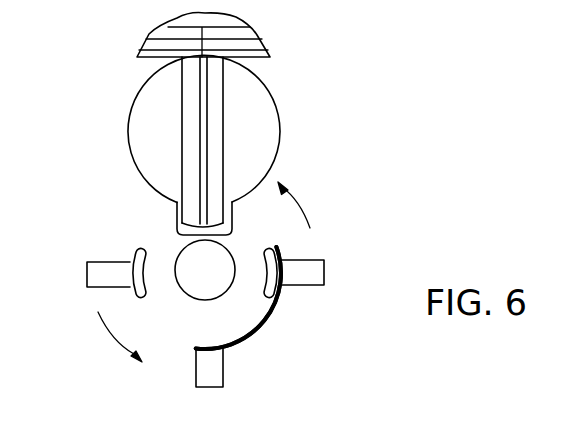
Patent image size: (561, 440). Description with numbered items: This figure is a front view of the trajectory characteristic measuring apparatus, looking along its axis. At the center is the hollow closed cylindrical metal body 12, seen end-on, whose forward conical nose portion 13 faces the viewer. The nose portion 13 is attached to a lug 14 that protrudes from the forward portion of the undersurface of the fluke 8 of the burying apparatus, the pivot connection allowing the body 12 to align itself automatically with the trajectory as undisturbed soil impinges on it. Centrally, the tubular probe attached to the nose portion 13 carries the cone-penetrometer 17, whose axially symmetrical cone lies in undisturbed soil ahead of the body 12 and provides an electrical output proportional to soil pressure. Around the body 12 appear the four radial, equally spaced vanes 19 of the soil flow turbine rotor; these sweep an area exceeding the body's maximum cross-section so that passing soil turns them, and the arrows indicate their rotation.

The fluke 8 is at (242, 35).
The lug 14 is at (213, 123).
The hollow closed cylindrical metal body 12 is at (159, 207).
The forward conical nose portion 13 is at (265, 239).
The cone-penetrometer 17 is at (203, 268).
The radial vanes 19 is at (95, 270).